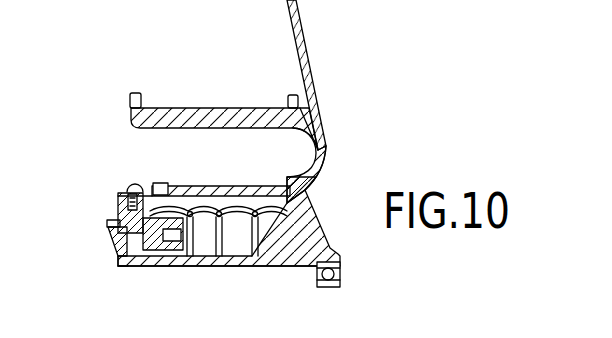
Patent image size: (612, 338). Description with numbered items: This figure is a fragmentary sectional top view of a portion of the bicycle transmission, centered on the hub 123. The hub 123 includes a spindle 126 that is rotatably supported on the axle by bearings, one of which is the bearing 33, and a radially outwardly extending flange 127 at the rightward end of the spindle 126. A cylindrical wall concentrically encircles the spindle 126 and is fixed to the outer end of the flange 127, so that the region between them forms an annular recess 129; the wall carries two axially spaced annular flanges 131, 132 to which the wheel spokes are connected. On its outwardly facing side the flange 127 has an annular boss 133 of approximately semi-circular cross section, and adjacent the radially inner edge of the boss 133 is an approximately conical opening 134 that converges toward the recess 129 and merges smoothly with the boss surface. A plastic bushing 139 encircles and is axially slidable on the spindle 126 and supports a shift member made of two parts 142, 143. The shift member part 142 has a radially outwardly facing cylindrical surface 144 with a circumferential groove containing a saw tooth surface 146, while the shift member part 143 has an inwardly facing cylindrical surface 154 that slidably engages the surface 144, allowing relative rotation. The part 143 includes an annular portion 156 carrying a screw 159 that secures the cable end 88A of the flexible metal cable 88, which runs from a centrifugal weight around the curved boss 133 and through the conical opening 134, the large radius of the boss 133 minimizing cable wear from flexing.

The bearing 33 is at (340, 286).
The flexible metal cable 88 is at (303, 50).
The cable end 88A is at (123, 190).
The hub 123 is at (225, 247).
The spindle 126 is at (196, 267).
The flange 127 is at (305, 210).
The annular recess 129 is at (231, 129).
The annular flange 131 is at (133, 92).
The annular flange 132 is at (290, 93).
The annular boss 133 is at (312, 152).
The opening 134 is at (300, 192).
The plastic bushing 139 is at (118, 254).
The shift member part 142 is at (113, 237).
The shift member part 143 is at (166, 221).
The cylindrical surface 144 is at (184, 211).
The saw tooth surface 146 is at (115, 221).
The cylindrical surface 154 is at (181, 198).
The annular portion 156 is at (120, 198).
The screw 159 is at (133, 182).